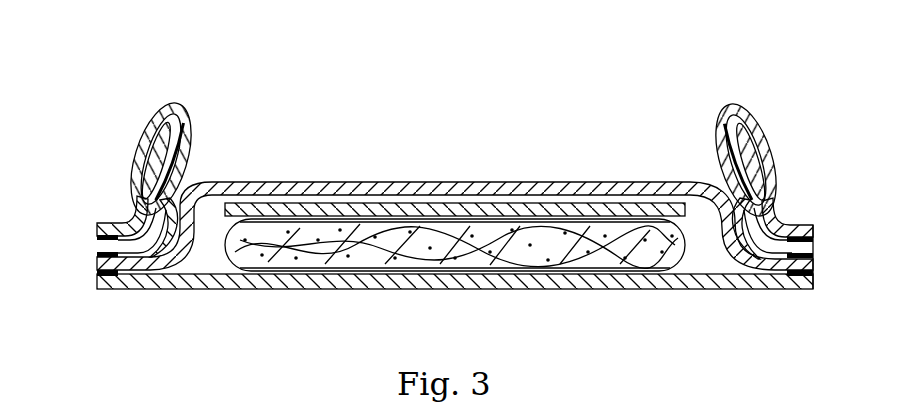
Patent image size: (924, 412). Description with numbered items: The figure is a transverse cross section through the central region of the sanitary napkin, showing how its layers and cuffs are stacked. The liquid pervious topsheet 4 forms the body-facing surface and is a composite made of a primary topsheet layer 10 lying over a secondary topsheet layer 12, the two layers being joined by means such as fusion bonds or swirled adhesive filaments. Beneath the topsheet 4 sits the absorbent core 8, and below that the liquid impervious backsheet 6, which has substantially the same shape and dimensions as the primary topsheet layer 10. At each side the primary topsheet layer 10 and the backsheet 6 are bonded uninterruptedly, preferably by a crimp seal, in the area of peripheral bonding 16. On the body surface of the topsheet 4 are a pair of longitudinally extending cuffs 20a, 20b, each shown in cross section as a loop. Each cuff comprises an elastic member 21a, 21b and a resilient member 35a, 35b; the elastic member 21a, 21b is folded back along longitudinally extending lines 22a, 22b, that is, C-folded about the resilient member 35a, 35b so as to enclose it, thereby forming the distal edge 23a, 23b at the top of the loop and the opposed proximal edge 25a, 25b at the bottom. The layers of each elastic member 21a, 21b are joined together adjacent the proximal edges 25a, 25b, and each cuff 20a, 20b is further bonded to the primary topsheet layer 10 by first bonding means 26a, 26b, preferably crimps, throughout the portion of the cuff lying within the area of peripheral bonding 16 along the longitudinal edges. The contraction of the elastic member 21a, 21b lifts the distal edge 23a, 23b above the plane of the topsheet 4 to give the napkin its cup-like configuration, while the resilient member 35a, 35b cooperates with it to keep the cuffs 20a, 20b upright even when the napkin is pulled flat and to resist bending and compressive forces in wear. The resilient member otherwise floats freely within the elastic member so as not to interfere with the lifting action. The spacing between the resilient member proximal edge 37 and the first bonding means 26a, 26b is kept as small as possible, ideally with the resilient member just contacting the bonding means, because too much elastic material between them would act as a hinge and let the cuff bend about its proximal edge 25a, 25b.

The topsheet 4 is at (455, 179).
The backsheet 6 is at (353, 283).
The absorbent core 8 is at (528, 265).
The primary topsheet layer 10 is at (270, 187).
The secondary topsheet layer 12 is at (400, 205).
The area of peripheral bonding 16 is at (808, 225).
The cuff 20a is at (161, 145).
The cuff 20b is at (714, 144).
The elastic member 21a is at (153, 142).
The elastic member 21b is at (755, 143).
The longitudinally extending line 22a is at (216, 135).
The distal edge 23a is at (177, 103).
The longitudinally extending line 22b is at (665, 135).
The distal edge 23b is at (720, 107).
The proximal edge 25a is at (130, 218).
The proximal edge 25b is at (787, 222).
The first bonding means 26a is at (97, 273).
The first bonding means 26b is at (813, 274).
The resilient member 35a is at (167, 168).
The resilient member 35b is at (753, 158).
The resilient member proximal edge 37 is at (150, 195).